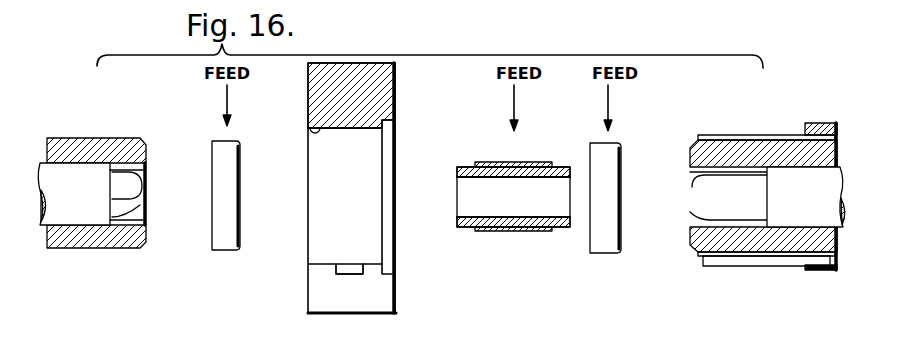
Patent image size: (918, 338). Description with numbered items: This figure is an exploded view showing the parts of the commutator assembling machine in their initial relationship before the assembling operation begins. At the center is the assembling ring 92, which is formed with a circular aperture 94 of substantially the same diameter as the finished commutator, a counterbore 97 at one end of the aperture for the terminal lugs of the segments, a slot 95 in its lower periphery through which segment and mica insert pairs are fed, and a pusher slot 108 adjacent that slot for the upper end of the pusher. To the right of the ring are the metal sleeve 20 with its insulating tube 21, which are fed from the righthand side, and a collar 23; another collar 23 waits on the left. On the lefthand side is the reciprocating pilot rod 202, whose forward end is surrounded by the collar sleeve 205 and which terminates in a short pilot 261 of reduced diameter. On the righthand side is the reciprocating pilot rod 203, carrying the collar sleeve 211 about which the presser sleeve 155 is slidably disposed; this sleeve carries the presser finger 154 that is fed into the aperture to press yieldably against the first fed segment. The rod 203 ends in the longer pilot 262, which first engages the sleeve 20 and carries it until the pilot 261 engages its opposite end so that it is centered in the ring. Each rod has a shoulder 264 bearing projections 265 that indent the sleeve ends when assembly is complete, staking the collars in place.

The collar sleeve 205 is at (100, 147).
The reciprocating pilot rod 202 is at (95, 219).
The shoulder 264 is at (114, 183).
The projections 265 is at (140, 193).
The pilot 261 is at (132, 210).
The collar 23 is at (235, 203).
The assembling ring 92 is at (388, 102).
The circular aperture 94 is at (312, 131).
The counterbore 97 is at (390, 123).
The slot 95 is at (383, 308).
The pusher slot 108 is at (349, 270).
The metal sleeve 20 is at (466, 171).
The insulating tube 21 is at (533, 229).
The pilot 262 is at (705, 208).
The collar sleeve 211 is at (695, 247).
The presser sleeve 155 is at (820, 124).
The presser finger 154 is at (790, 263).
The reciprocating pilot rod 203 is at (806, 198).